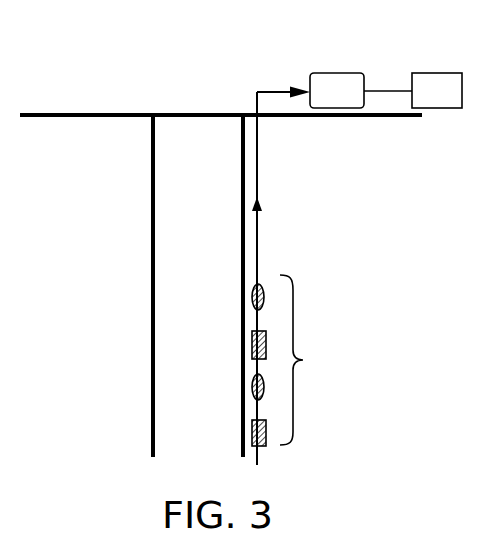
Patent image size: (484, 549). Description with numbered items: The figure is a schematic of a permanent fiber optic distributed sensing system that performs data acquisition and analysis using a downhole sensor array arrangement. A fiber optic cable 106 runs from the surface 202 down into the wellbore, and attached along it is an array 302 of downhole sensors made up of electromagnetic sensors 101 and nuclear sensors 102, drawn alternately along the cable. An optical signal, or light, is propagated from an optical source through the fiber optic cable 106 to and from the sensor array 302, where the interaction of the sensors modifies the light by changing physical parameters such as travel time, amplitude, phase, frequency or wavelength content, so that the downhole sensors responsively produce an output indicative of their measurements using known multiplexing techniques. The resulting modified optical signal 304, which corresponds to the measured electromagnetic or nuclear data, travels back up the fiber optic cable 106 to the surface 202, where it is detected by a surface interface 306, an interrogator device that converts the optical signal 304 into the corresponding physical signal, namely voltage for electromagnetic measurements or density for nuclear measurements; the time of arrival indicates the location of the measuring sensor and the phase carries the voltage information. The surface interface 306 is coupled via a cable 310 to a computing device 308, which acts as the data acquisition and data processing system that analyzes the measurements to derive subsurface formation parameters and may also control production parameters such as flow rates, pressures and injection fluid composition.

The surface 202 is at (61, 113).
The fiber optic cable 106 is at (259, 153).
The modified optical signal 304 is at (259, 224).
The surface interface 306 is at (354, 104).
The computing device 308 is at (455, 104).
The cable 310 is at (386, 91).
The nuclear downhole sensor 102 is at (251, 296).
The electromagnetic downhole sensor 101 is at (251, 342).
The sensor array 302 is at (312, 360).